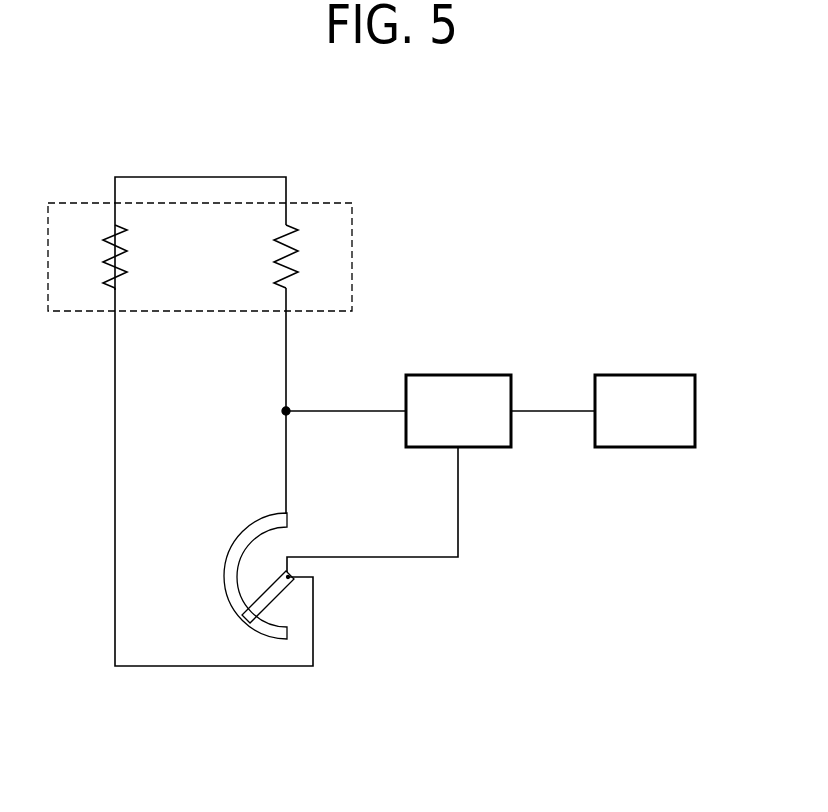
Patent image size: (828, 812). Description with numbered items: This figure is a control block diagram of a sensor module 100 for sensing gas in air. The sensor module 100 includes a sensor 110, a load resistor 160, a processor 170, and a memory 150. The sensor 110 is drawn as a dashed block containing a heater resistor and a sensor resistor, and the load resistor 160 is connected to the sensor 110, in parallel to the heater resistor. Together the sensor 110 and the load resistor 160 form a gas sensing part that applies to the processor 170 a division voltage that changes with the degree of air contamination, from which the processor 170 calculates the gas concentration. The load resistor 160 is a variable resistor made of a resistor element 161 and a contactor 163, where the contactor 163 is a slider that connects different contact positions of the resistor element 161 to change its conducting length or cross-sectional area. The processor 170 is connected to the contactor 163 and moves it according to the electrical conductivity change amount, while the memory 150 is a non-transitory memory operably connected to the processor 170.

The sensor module 100 is at (76, 103).
The sensor 110 is at (352, 254).
The memory 150 is at (646, 375).
The load resistor 160 is at (303, 739).
The resistor element 161 is at (253, 622).
The contactor 163 is at (274, 590).
The processor 170 is at (458, 375).